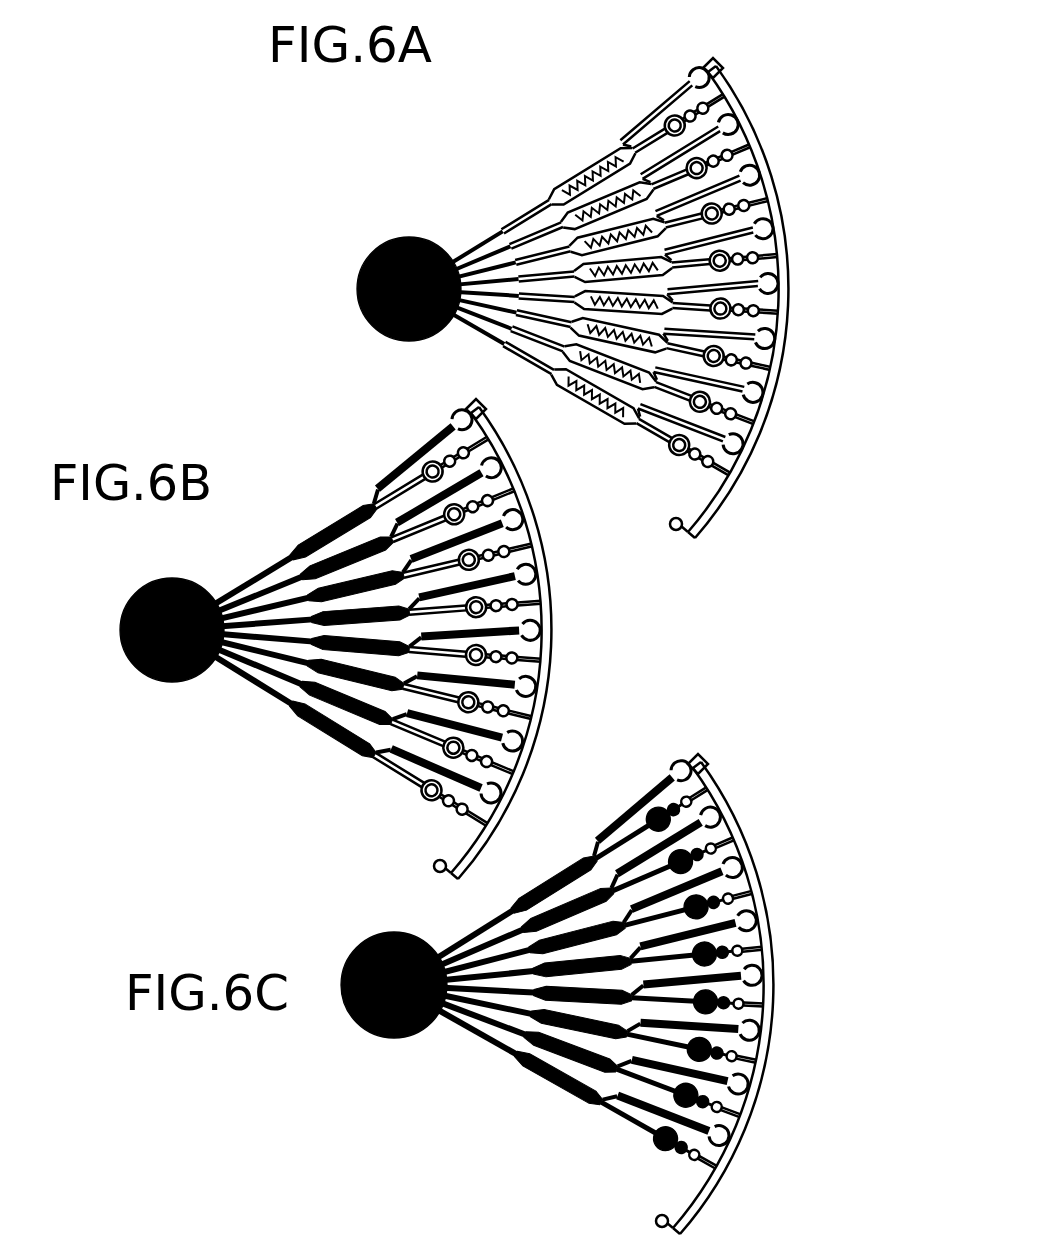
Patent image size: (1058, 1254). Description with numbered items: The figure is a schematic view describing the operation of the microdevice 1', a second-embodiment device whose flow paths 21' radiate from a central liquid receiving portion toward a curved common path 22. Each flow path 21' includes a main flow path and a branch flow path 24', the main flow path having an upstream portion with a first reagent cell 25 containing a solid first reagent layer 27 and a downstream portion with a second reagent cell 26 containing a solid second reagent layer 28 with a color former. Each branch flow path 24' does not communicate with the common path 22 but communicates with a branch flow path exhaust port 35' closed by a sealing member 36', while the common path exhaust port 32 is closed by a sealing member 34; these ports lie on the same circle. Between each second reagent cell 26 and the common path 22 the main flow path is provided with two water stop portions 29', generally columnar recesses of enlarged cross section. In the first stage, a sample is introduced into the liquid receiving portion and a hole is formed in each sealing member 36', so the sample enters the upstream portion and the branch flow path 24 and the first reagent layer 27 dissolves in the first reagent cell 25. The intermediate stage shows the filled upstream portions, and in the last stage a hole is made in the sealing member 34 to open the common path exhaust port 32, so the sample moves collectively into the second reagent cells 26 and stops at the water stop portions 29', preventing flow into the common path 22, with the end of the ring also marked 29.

In FIG. 6A, the microdevice 1' is at (443, 211).
In FIG. 6B, the microdevice 1' is at (216, 552).
In FIG. 6C, the microdevice 1' is at (486, 892).
In FIG. 6A, the flow path 21' is at (549, 292).
In FIG. 6B, the flow path 21' is at (296, 616).
In FIG. 6C, the flow path 21' is at (518, 988).
In FIG. 6A, the common path 22 is at (790, 290).
In FIG. 6B, the common path 22 is at (558, 660).
In FIG. 6C, the common path 22 is at (795, 1000).
In FIG. 6A, the branch flow path 24 is at (649, 112).
In FIG. 6B, the branch flow path 24' is at (483, 486).
In FIG. 6A, the first reagent cell 25 is at (566, 388).
In FIG. 6B, the first reagent cell 25 is at (318, 542).
In FIG. 6C, the first reagent cell 25 is at (545, 870).
In FIG. 6A, the second reagent cell 26 is at (666, 122).
In FIG. 6B, the second reagent cell 26 is at (440, 462).
In FIG. 6C, the second reagent cell 26 is at (735, 868).
In FIG. 6A, the first reagent layer 27 is at (595, 400).
In FIG. 6A, the second reagent layer 28 is at (693, 108).
In FIG. 6B, the second reagent layer 28 is at (488, 468).
In FIG. 6A, the connection terminal 29 is at (743, 63).
In FIG. 6A, the water stop portion 29' is at (753, 483).
In FIG. 6B, the water stop portion 29' is at (534, 625).
In FIG. 6C, the water stop portion 29' is at (781, 1013).
In FIG. 6A, the common path exhaust port 32 is at (683, 545).
In FIG. 6B, the common path exhaust port 32 is at (432, 868).
In FIG. 6C, the common path exhaust port 32 is at (654, 1220).
In FIG. 6A, the sealing member 34 is at (684, 529).
In FIG. 6B, the sealing member 34 is at (448, 870).
In FIG. 6C, the sealing member 34 is at (670, 1225).
In FIG. 6A, the branch flow path exhaust port 35' is at (824, 234).
In FIG. 6B, the branch flow path exhaust port 35' is at (593, 580).
In FIG. 6C, the branch flow path exhaust port 35' is at (804, 958).
In FIG. 6A, the sealing member 36' is at (766, 338).
In FIG. 6B, the sealing member 36' is at (526, 687).
In FIG. 6C, the sealing member 36' is at (747, 921).